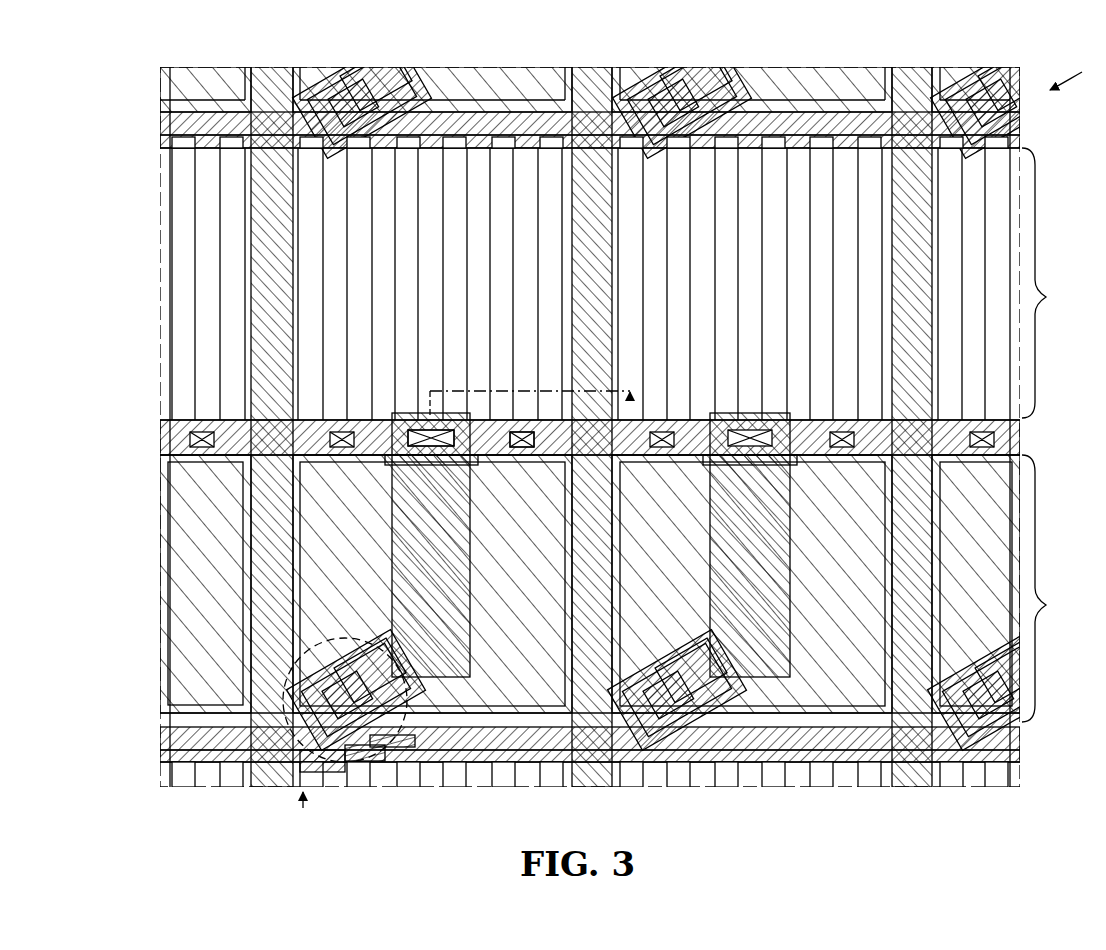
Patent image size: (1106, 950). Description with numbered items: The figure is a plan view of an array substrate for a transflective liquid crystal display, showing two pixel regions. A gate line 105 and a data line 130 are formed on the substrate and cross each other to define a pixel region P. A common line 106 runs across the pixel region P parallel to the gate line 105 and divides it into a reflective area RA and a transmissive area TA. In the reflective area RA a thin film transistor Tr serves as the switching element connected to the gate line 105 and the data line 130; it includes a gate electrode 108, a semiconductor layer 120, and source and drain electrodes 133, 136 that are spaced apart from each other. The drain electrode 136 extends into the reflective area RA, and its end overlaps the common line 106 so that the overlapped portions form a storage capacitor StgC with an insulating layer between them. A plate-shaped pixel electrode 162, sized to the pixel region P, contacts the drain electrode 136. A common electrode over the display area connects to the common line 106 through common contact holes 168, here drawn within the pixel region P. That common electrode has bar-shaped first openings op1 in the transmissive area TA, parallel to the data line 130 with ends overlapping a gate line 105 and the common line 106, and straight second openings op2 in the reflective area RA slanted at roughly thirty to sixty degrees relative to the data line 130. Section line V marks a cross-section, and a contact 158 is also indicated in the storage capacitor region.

The pixel electrode 162 is at (415, 128).
The pixel region P is at (541, 284).
The first openings op1 is at (310, 262).
The storage contact hole 158 is at (430, 428).
The common contact holes 168 is at (520, 428).
The common line 106 is at (160, 430).
The data line 130 is at (265, 510).
The second openings op2 is at (170, 575).
The gate electrode 108 is at (362, 644).
The storage capacitor StgC is at (472, 457).
The thin film transistor Tr is at (331, 722).
The semiconductor layer 120 is at (340, 772).
The drain electrode 136 is at (362, 760).
The source electrode 133 is at (375, 745).
The gate line 105 is at (520, 762).
The section line V- V is at (466, 611).
The transmissive area TA is at (1047, 283).
The reflective area RA is at (1048, 588).